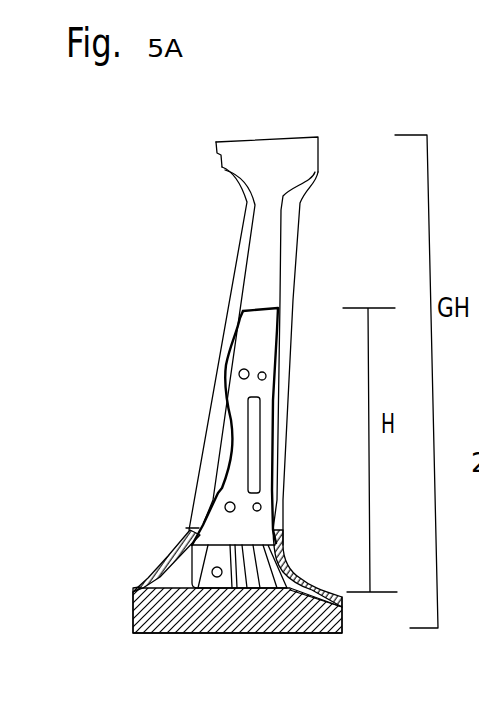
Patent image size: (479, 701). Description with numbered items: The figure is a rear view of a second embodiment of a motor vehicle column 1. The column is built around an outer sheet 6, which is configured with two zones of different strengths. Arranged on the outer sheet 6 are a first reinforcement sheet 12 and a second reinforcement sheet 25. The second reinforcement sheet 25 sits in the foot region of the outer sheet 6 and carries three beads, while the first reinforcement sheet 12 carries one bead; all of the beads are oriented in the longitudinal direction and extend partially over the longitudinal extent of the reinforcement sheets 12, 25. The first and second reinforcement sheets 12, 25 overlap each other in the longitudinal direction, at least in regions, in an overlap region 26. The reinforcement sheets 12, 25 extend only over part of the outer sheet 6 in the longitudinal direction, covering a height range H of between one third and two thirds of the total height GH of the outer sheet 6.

The motor vehicle column 1 is at (158, 142).
The outer sheet 6 is at (260, 247).
The first reinforcement sheet 12 is at (250, 348).
The second reinforcement sheet 25 is at (177, 557).
The overlap region 26 is at (297, 492).